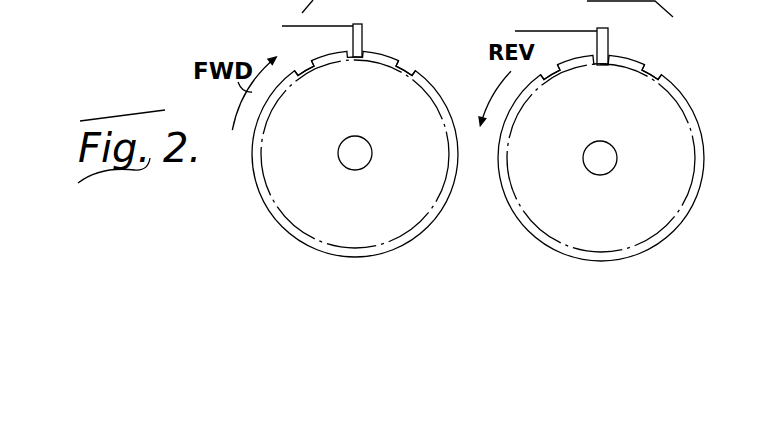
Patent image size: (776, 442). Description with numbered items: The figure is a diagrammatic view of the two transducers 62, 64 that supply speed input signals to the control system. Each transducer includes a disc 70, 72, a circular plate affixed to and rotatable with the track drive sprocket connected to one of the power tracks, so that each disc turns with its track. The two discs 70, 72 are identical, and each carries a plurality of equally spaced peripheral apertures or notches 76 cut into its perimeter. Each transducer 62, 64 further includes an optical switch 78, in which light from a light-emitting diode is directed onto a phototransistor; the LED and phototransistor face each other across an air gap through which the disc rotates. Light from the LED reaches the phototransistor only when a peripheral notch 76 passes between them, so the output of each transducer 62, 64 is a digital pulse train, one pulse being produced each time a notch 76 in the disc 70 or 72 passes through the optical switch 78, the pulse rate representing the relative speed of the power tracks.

The transducer 62 is at (380, 26).
The transducer 64 is at (625, 40).
The disc 70 is at (282, 187).
The disc 72 is at (676, 192).
The peripheral notches 76 is at (412, 68).
The optical switch 78 is at (364, 40).